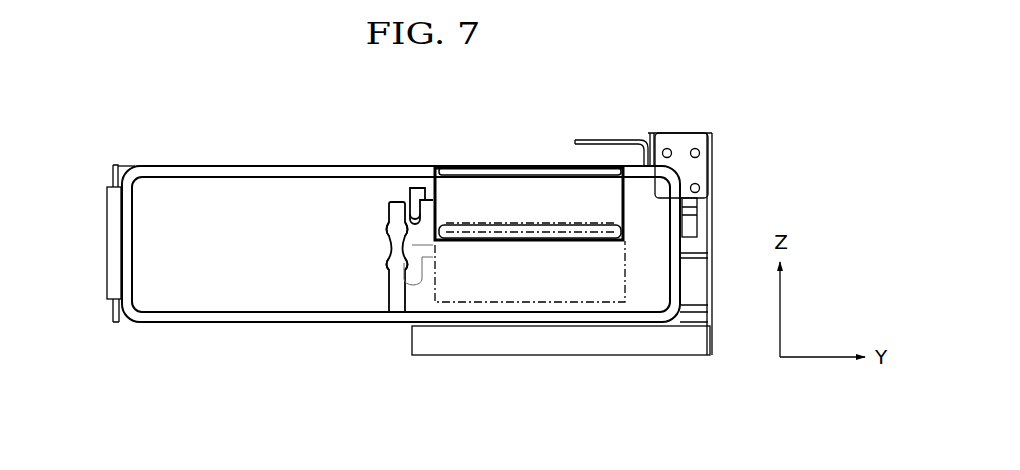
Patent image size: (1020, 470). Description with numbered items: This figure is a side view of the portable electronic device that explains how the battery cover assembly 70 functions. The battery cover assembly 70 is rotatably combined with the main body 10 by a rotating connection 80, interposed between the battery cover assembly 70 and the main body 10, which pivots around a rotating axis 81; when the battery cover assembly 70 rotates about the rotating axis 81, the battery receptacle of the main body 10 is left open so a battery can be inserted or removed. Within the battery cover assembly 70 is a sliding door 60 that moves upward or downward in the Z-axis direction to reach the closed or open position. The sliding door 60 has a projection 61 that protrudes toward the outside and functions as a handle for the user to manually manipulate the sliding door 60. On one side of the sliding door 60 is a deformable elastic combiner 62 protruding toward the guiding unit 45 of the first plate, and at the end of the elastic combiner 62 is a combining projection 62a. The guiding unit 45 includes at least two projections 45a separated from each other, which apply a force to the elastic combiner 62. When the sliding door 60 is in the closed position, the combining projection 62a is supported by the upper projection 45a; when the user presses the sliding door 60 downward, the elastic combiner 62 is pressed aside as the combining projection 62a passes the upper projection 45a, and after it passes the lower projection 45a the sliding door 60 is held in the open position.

The main body 10 is at (539, 340).
The guiding unit 45 is at (397, 292).
The projection 45a is at (386, 264).
The sliding door 60 is at (472, 190).
The projection 61 is at (547, 172).
The elastic combiner 62 is at (424, 192).
The combining projection 62a is at (409, 212).
The battery cover assembly 70 is at (205, 334).
The rotating connection 80 is at (114, 266).
The rotating axis 81 is at (117, 324).